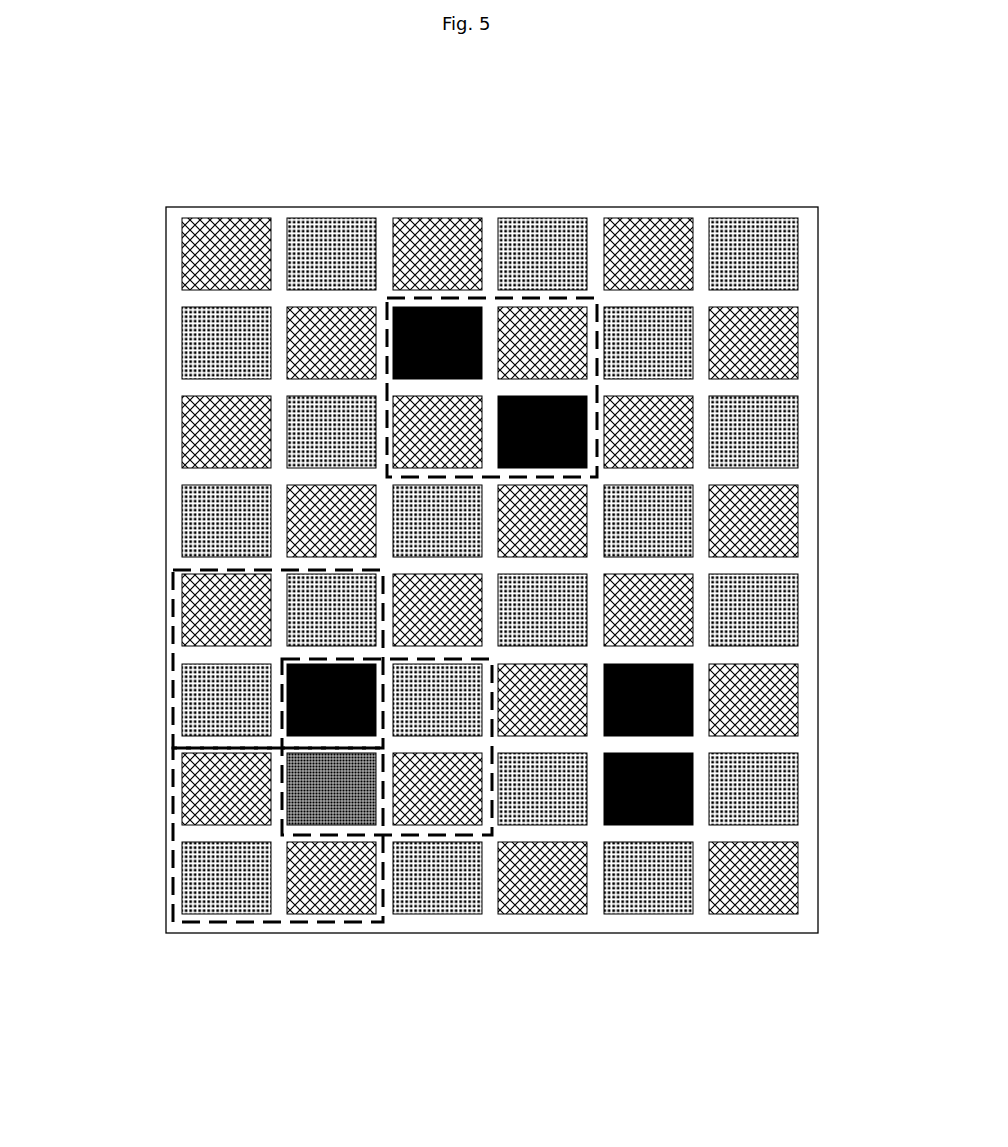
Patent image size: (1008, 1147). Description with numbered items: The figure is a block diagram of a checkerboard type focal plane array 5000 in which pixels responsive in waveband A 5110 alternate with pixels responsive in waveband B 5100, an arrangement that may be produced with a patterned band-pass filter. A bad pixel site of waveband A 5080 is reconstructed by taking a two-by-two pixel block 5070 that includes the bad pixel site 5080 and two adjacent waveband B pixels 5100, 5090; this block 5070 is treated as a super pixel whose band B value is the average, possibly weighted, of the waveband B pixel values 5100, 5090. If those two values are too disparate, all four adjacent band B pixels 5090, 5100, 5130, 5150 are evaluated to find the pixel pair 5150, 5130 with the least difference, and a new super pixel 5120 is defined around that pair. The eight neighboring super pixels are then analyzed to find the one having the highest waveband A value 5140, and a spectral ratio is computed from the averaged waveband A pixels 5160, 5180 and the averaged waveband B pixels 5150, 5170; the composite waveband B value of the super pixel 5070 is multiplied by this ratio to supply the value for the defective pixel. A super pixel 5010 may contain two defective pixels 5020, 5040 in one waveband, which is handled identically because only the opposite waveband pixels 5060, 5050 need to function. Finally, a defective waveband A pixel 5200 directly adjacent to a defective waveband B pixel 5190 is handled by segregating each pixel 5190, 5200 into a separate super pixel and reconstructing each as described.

The checkerboard type FPA 5000 is at (490, 207).
The super pixel 5010 is at (488, 297).
The defective pixel 5020 is at (442, 307).
The defective pixel 5040 is at (548, 395).
The pixel of the opposite waveband 5050 is at (547, 305).
The pixel of the opposite waveband 5060 is at (440, 393).
The 2×2 pixel block (super pixel) 5070 is at (173, 657).
The bad pixel site of waveband A 5080 is at (287, 700).
The waveband B pixel 5090 is at (182, 702).
The pixel responsive in waveband B 5100 is at (288, 613).
The pixel responsive in waveband A 5110 is at (183, 613).
The new super pixel 5120 is at (493, 747).
The band B pixel 5130 is at (442, 663).
The adjacent super pixel with highest waveband A value 5140 is at (278, 924).
The waveband B pixel 5150 is at (330, 823).
The waveband A pixel 5160 is at (183, 792).
The waveband B pixel 5170 is at (183, 880).
The waveband A pixel 5180 is at (335, 913).
The defective pixel of waveband B 5190 is at (693, 700).
The defective pixel of waveband A 5200 is at (693, 788).